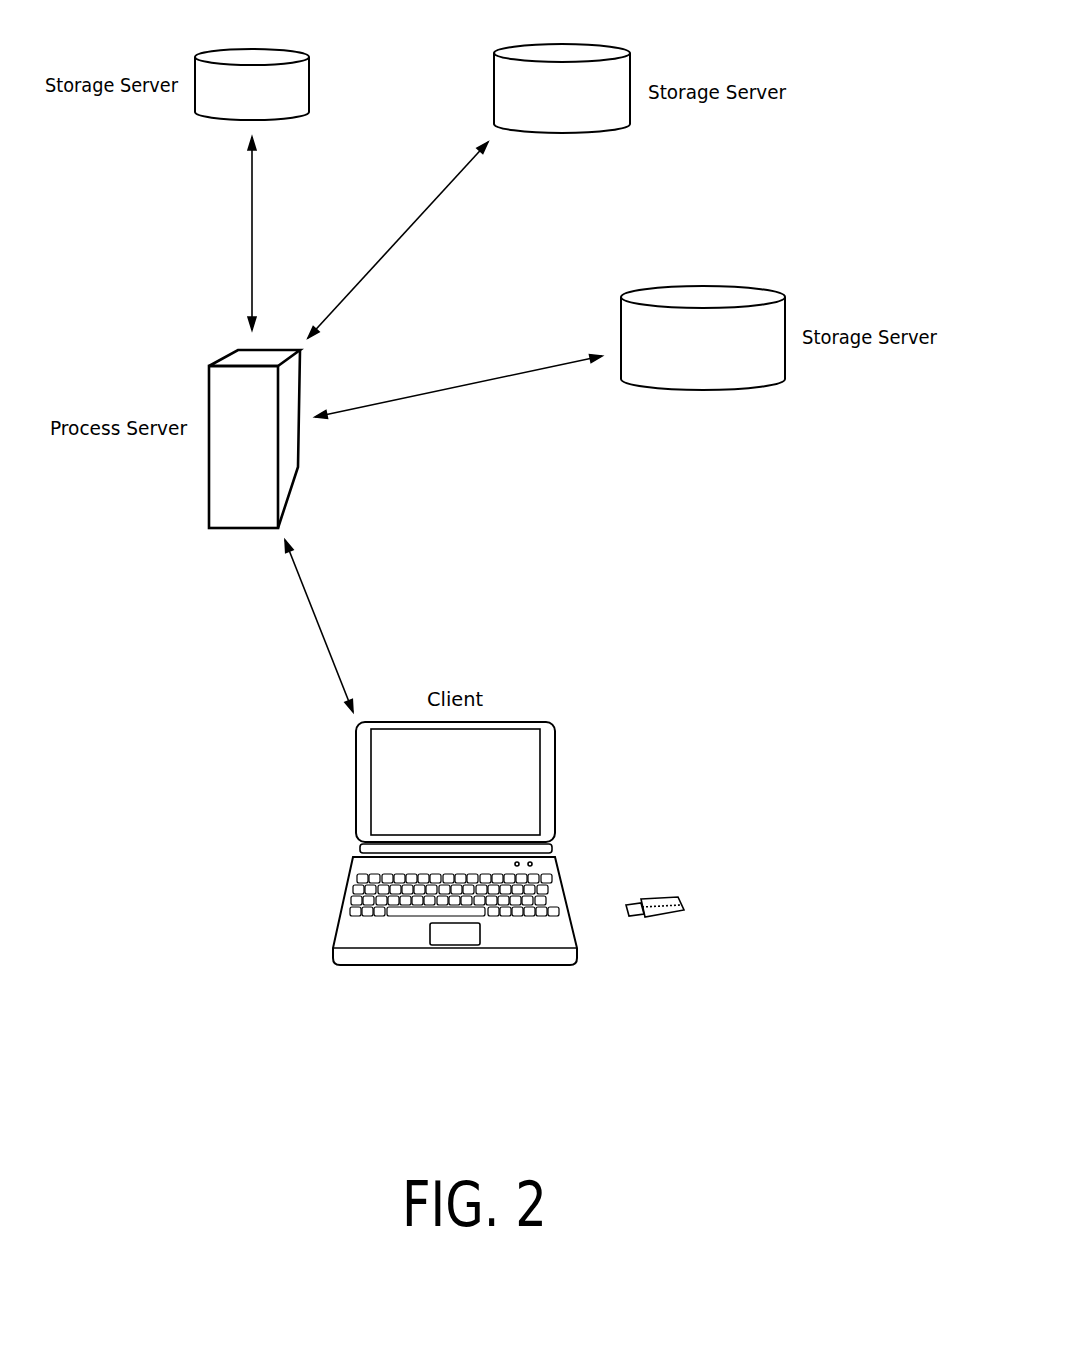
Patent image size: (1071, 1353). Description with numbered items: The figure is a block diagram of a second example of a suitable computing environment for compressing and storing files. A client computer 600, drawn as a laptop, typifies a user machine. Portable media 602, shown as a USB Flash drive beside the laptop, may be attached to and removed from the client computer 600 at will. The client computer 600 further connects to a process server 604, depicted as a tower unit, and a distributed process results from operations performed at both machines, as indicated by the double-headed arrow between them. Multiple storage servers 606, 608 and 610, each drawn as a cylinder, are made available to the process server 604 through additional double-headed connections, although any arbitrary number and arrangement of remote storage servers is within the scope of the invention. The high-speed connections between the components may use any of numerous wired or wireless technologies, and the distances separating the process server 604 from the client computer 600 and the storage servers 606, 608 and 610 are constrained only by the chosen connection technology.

The client computer 600 is at (556, 722).
The portable media 602 is at (677, 897).
The process server 604 is at (204, 530).
The storage server 606 is at (783, 291).
The storage server 608 is at (493, 52).
The storage server 610 is at (312, 57).